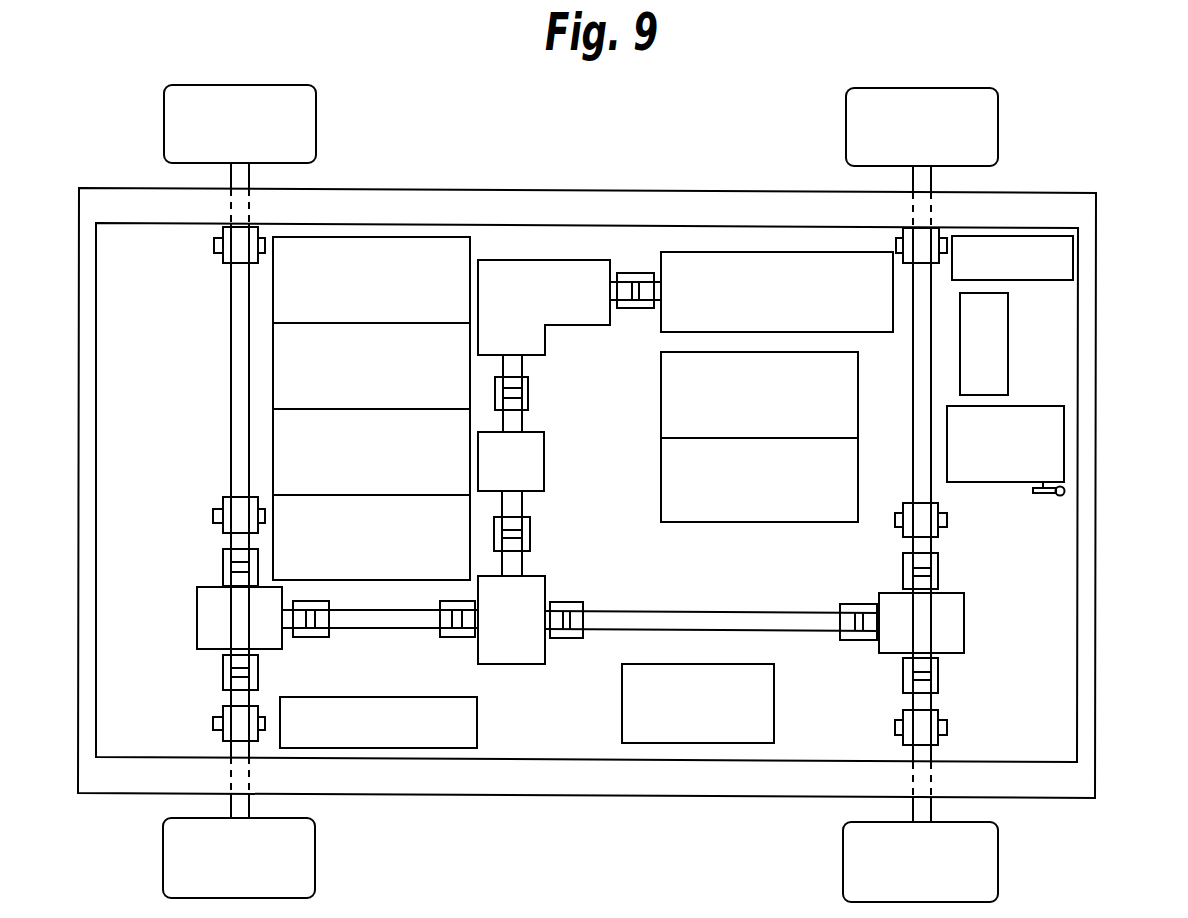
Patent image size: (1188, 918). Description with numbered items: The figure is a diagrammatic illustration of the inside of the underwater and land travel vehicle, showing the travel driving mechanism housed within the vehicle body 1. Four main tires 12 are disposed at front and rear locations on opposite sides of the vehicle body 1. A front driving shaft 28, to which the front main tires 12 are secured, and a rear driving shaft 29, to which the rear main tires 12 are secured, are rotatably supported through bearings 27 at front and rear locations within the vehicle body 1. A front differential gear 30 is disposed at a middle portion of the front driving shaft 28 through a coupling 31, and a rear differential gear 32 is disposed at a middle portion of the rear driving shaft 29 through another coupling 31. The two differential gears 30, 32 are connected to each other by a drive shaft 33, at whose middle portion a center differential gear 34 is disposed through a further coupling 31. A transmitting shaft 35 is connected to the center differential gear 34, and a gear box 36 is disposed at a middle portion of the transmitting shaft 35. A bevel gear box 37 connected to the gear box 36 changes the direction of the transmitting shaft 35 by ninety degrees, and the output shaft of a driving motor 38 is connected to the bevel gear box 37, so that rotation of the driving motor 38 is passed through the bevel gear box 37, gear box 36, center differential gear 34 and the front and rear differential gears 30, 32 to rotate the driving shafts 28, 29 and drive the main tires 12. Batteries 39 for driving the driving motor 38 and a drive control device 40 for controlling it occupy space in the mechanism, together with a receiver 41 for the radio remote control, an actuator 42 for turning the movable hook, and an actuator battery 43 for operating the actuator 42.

The vehicle body 1 is at (623, 192).
The main tire 12 is at (312, 125).
The bearing 27 is at (212, 242).
The front driving shaft 28 is at (913, 387).
The rear driving shaft 29 is at (230, 390).
The front differential gear 30 is at (952, 597).
The coupling 31 is at (567, 602).
The rear differential gear 32 is at (195, 617).
The drive shaft 33 is at (675, 611).
The center differential gear 34 is at (517, 664).
The transmitting shaft 35 is at (522, 500).
The gear box 36 is at (544, 448).
The bevel gear box 37 is at (545, 335).
The driving motor 38 is at (673, 317).
The battery 39 is at (457, 253).
The drive control device 40 is at (774, 712).
The receiver 41 is at (1072, 263).
The actuator 42 is at (1060, 439).
The actuator battery 43 is at (1003, 348).